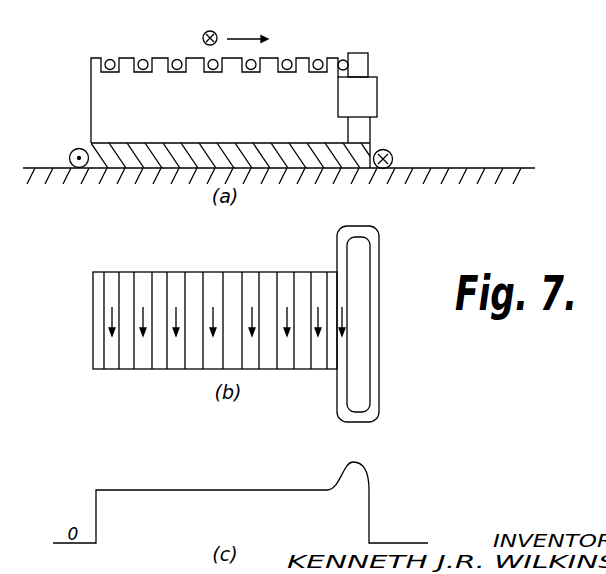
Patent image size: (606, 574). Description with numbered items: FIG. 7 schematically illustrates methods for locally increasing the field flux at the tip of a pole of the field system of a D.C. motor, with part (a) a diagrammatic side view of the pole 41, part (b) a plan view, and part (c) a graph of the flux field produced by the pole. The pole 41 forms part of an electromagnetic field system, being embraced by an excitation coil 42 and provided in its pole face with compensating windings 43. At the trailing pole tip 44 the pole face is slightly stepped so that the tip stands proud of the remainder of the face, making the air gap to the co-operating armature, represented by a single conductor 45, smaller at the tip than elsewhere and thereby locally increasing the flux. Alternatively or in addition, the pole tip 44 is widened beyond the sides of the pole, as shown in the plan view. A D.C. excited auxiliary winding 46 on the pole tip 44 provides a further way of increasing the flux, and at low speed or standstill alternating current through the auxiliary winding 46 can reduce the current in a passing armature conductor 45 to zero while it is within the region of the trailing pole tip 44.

The pole 41 is at (91, 115).
The excitation coil 42 is at (70, 156).
The compensating windings 43 is at (110, 59).
The trailing pole tip 44 is at (368, 60).
The armature conductor 45 is at (217, 33).
The auxiliary winding 46 is at (372, 96).